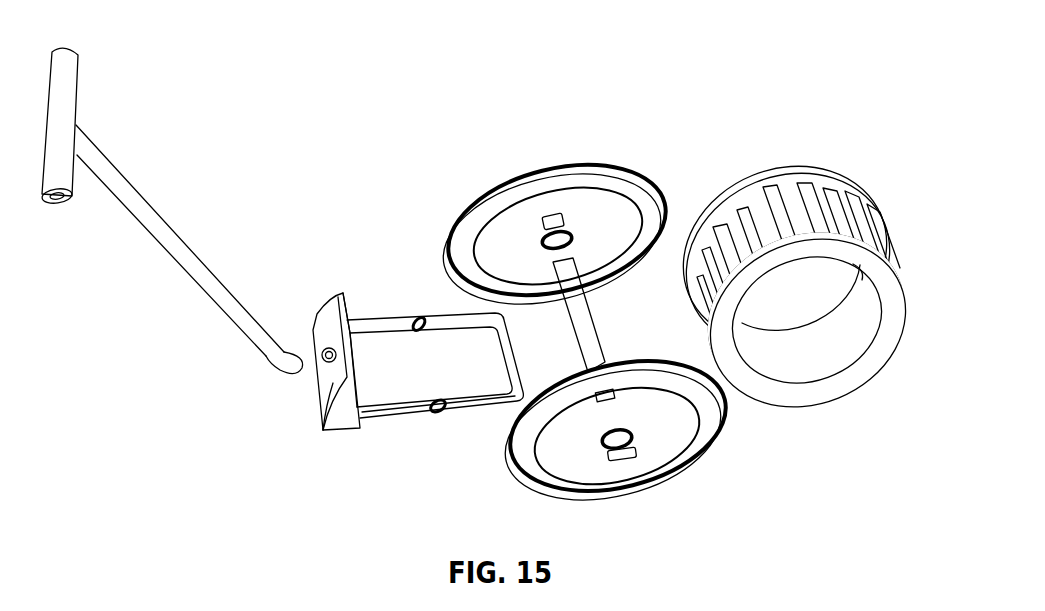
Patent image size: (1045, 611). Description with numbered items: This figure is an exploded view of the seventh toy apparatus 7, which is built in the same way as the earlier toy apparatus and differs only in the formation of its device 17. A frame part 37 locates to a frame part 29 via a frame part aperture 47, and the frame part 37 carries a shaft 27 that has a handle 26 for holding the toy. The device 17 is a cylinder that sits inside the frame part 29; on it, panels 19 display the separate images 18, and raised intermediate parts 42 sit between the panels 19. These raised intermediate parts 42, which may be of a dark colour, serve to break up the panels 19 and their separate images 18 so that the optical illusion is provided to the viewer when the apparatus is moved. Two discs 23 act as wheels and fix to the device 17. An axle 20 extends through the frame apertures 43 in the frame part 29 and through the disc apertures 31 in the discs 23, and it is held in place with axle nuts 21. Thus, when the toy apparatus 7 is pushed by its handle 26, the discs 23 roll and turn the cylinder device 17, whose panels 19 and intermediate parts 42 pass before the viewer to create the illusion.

The toy apparatus 7 is at (387, 112).
The device 17 is at (773, 220).
The separate images 18 is at (740, 245).
The panels 19 is at (785, 212).
The axle 20 is at (593, 343).
The axle nuts 21 is at (550, 213).
The discs 23 is at (592, 212).
The handle 26 is at (64, 112).
The shaft 27 is at (177, 243).
The frame part 29 is at (397, 420).
The disc apertures 31 is at (632, 442).
The frame part 37 is at (287, 350).
The intermediate parts 42 is at (827, 210).
The frame apertures 43 is at (436, 403).
The frame part aperture 47 is at (325, 358).